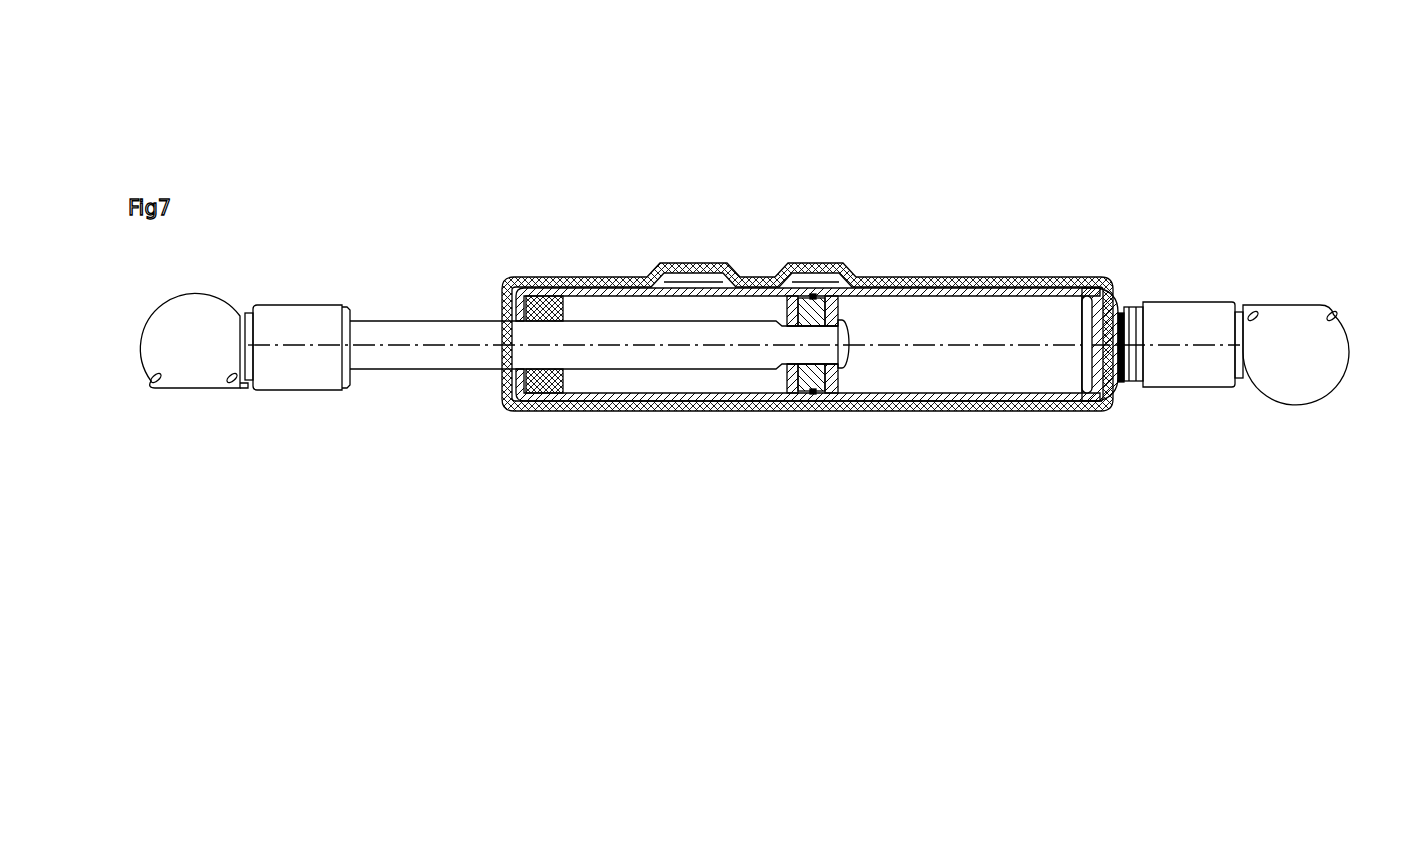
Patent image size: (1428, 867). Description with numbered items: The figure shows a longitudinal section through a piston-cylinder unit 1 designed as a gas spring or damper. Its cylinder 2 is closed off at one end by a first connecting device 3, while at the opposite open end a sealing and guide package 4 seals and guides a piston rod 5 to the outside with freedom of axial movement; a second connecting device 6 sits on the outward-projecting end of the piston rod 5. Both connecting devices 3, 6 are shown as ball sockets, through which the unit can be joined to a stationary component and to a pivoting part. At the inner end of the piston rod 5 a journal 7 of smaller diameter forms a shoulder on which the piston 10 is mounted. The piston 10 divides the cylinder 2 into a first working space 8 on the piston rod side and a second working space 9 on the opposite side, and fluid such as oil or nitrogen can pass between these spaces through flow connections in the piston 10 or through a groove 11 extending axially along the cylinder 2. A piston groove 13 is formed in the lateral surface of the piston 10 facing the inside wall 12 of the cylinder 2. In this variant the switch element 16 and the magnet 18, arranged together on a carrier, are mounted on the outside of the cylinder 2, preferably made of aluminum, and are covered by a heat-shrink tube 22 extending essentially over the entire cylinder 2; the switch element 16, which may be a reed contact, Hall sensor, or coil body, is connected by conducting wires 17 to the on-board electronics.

The piston-cylinder unit 1 is at (1281, 98).
The cylinder 2 is at (1048, 404).
The first connecting device 3 is at (1290, 357).
The sealing and guide package 4 is at (542, 411).
The piston rod 5 is at (468, 358).
The second connecting device 6 is at (279, 330).
The journal 7 is at (807, 337).
The first working space 8 is at (678, 305).
The second working space 9 is at (980, 313).
The piston 10 is at (832, 388).
The groove 11 is at (965, 395).
The inside wall 12 is at (963, 293).
The piston groove 13 is at (800, 372).
The switch element 16 is at (813, 278).
The conducting wires 17 is at (1157, 285).
The magnet 18 is at (706, 278).
The heat-shrink tube 22 is at (688, 408).